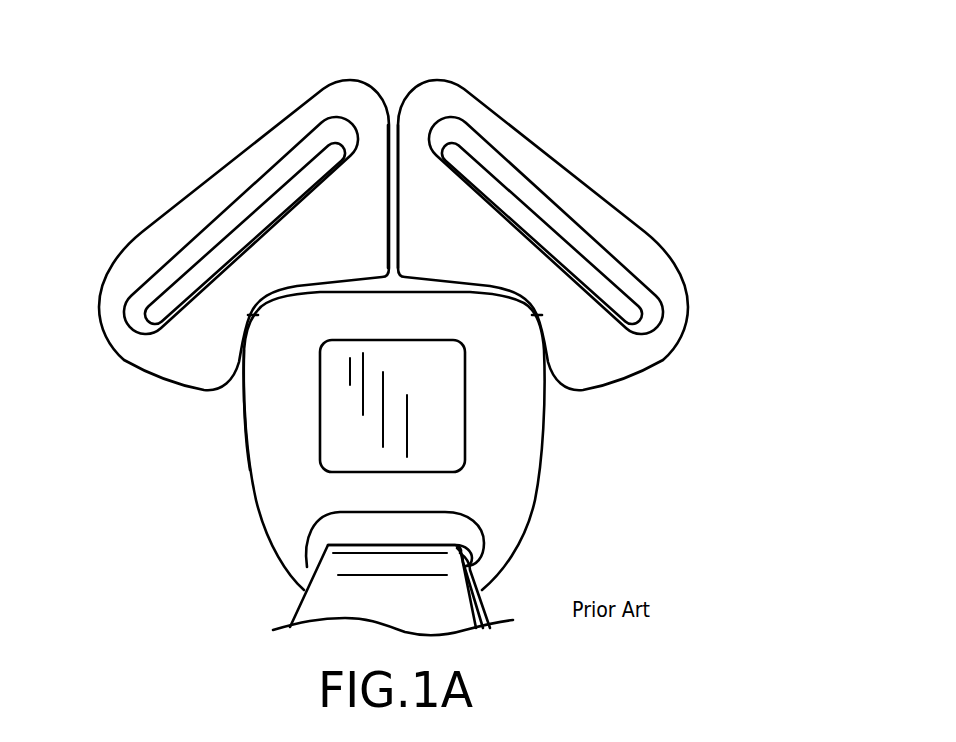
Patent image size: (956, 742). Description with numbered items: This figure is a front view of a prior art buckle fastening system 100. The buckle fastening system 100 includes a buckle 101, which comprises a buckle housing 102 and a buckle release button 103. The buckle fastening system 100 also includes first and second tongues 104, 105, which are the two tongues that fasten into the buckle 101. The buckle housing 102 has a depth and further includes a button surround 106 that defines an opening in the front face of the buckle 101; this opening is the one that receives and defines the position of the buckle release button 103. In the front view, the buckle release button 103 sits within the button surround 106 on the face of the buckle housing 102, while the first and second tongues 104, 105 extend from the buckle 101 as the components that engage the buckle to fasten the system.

The buckle fastening system 100 is at (147, 118).
The buckle 101 is at (220, 482).
The buckle housing 102 is at (540, 480).
The buckle release button 103 is at (445, 410).
The first tongue 104 is at (343, 93).
The second tongue 105 is at (448, 88).
The button surround 106 is at (270, 453).